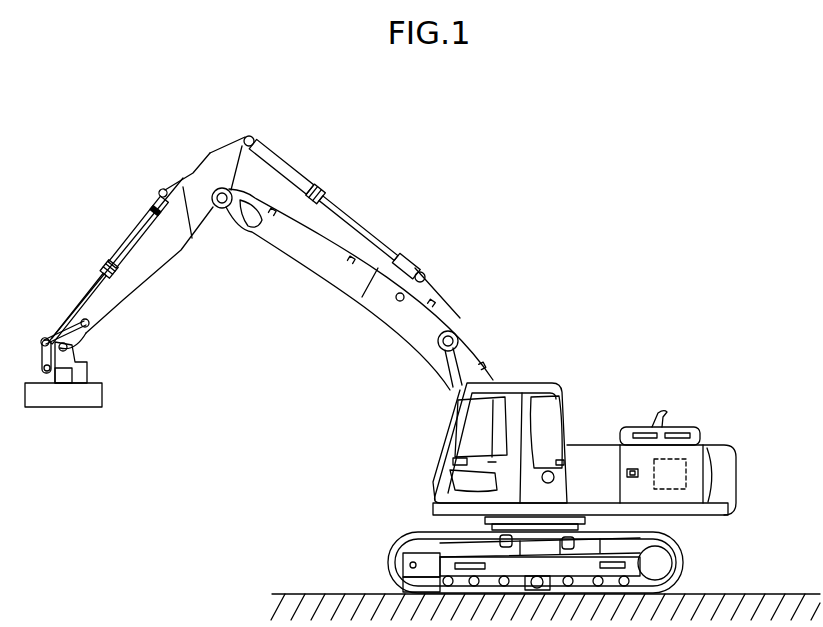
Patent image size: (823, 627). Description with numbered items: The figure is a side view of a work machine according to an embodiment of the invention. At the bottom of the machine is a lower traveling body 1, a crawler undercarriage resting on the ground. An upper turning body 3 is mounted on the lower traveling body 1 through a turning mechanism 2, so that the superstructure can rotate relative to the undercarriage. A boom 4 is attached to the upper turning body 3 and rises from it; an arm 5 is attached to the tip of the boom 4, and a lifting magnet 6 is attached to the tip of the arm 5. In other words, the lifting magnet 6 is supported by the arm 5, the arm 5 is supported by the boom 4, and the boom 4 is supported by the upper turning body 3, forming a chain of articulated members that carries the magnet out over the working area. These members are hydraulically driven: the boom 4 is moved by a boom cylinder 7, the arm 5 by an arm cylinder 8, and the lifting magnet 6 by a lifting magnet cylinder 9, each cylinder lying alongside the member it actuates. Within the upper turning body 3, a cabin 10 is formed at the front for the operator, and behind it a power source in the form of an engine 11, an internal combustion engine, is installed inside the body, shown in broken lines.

The lower traveling body 1 is at (387, 557).
The turning mechanism 2 is at (655, 540).
The upper turning body 3 is at (596, 443).
The boom 4 is at (385, 312).
The arm 5 is at (168, 253).
The lifting magnet 6 is at (58, 410).
The boom cylinder 7 is at (450, 369).
The arm cylinder 8 is at (376, 238).
The lifting magnet cylinder 9 is at (128, 240).
The cabin 10 is at (550, 381).
The engine 11 is at (686, 470).